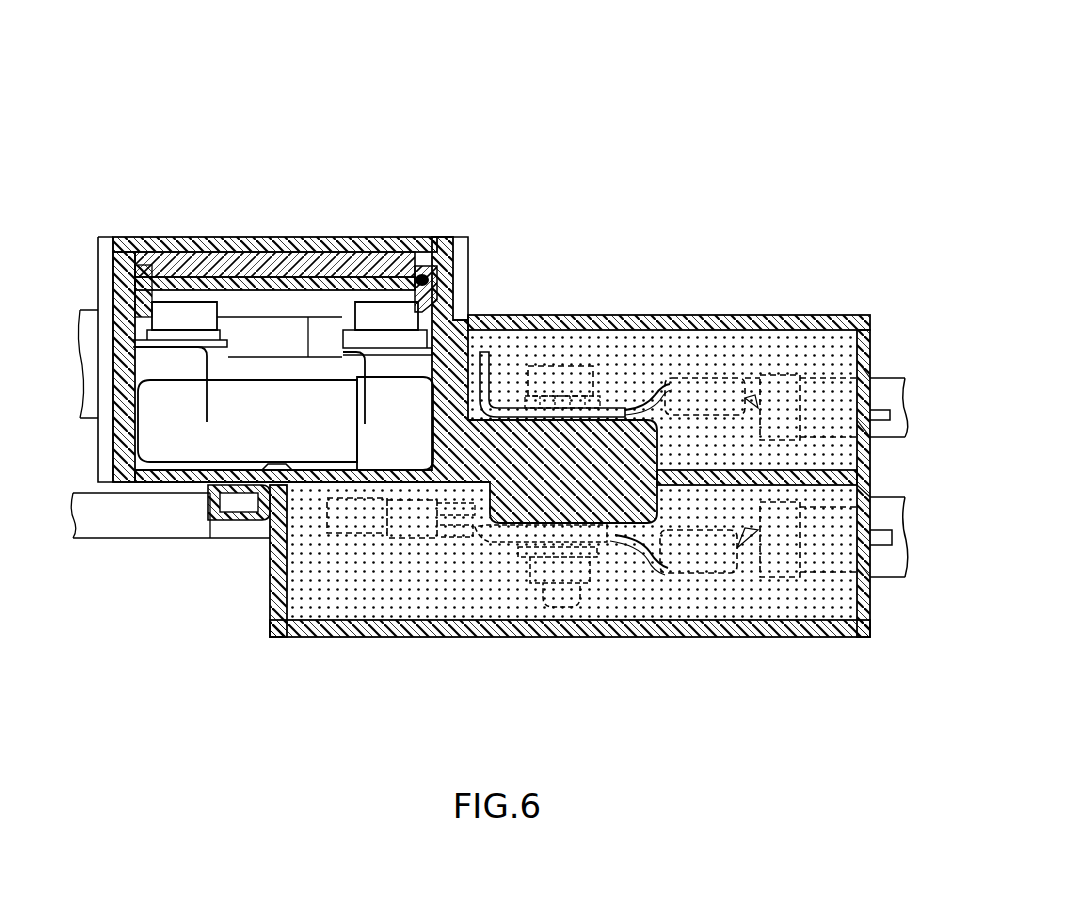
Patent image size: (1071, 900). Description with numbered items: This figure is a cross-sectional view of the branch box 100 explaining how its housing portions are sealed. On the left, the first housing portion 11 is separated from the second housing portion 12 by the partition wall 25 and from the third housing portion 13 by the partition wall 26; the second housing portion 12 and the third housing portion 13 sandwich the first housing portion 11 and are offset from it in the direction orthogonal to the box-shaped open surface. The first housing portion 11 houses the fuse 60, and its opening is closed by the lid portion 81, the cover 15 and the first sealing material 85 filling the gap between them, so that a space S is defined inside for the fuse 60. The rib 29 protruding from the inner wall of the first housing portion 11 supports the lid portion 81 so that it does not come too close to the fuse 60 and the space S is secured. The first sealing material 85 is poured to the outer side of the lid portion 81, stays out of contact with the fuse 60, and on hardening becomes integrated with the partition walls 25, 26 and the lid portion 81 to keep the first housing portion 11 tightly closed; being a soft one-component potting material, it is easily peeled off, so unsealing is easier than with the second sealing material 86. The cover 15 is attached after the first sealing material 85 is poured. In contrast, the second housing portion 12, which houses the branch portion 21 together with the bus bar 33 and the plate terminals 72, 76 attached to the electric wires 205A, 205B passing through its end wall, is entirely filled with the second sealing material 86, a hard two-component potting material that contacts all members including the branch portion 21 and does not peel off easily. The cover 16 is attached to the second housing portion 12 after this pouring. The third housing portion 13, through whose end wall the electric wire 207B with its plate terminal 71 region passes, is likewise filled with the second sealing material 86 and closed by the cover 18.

The branch box 100 is at (495, 76).
The first housing portion 11 is at (206, 145).
The second housing portion 12 is at (749, 190).
The third housing portion 13 is at (570, 488).
The cover 15 is at (176, 243).
The cover 16 is at (719, 323).
The cover 18 is at (388, 634).
The branch portion 21 is at (563, 362).
The partition wall 25 is at (443, 286).
The partition wall 26 is at (126, 246).
The rib 29 is at (284, 326).
The bus bar 33 is at (486, 350).
The fuse 60 is at (254, 406).
The plate terminal 71 is at (175, 346).
The plate terminal 72 is at (656, 383).
The plate terminal 76 is at (633, 572).
The lid portion 81 is at (430, 283).
The first sealing material 85 is at (400, 266).
The second sealing material 86 is at (781, 349).
The electric wire 205A is at (832, 378).
The electric wire 205B is at (832, 578).
The electric wire 207B is at (101, 540).
The space S is at (344, 330).